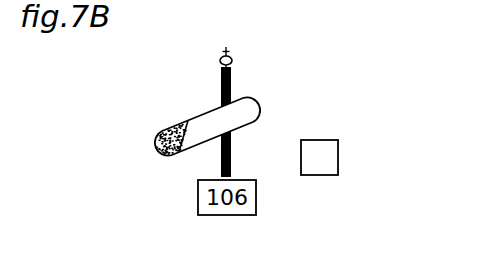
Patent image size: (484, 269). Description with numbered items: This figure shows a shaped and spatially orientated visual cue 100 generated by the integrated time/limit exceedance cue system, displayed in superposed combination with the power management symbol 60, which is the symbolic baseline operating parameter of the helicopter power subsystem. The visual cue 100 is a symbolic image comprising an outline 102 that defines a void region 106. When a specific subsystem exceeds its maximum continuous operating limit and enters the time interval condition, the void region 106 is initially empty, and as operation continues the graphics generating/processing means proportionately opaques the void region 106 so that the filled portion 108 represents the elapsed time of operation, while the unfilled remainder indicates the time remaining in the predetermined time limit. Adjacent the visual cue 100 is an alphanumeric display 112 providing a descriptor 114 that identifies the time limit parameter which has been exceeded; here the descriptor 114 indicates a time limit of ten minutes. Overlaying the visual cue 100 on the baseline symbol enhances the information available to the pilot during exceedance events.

The power management symbol 60 is at (270, 60).
The visual cue 100 is at (162, 155).
The outline 102 is at (202, 115).
The void region 106 is at (246, 111).
The filled portion 108 is at (171, 131).
The alphanumeric display 112 is at (338, 153).
The descriptor 114 is at (313, 146).